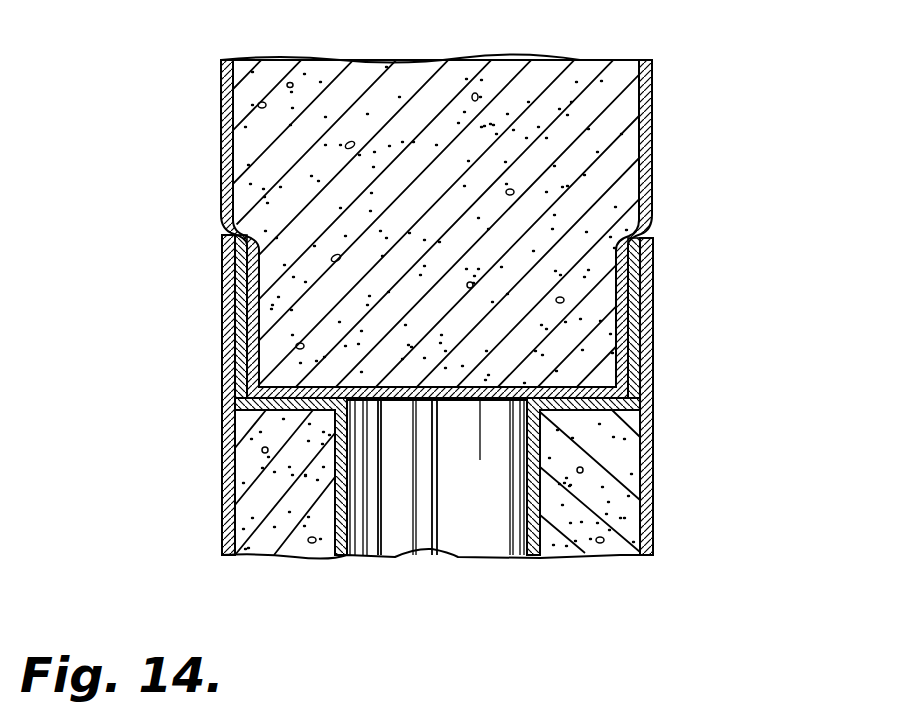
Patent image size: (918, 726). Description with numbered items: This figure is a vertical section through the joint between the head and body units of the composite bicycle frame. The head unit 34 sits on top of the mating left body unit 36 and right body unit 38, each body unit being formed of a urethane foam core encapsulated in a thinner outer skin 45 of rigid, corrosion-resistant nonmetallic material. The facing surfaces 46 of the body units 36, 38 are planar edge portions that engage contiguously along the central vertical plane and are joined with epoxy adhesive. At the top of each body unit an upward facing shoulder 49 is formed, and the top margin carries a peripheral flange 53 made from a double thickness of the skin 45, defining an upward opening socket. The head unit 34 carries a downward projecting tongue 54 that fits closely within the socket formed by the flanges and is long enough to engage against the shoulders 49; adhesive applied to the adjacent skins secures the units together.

The head unit 34 is at (658, 94).
The left body unit 36 is at (212, 538).
The right body unit 38 is at (666, 546).
The outer skin 45 is at (222, 288).
The facing surfaces 46 is at (437, 530).
The upward facing shoulder 49 is at (291, 411).
The peripheral flange 53 is at (653, 350).
The tongue 54 is at (652, 295).